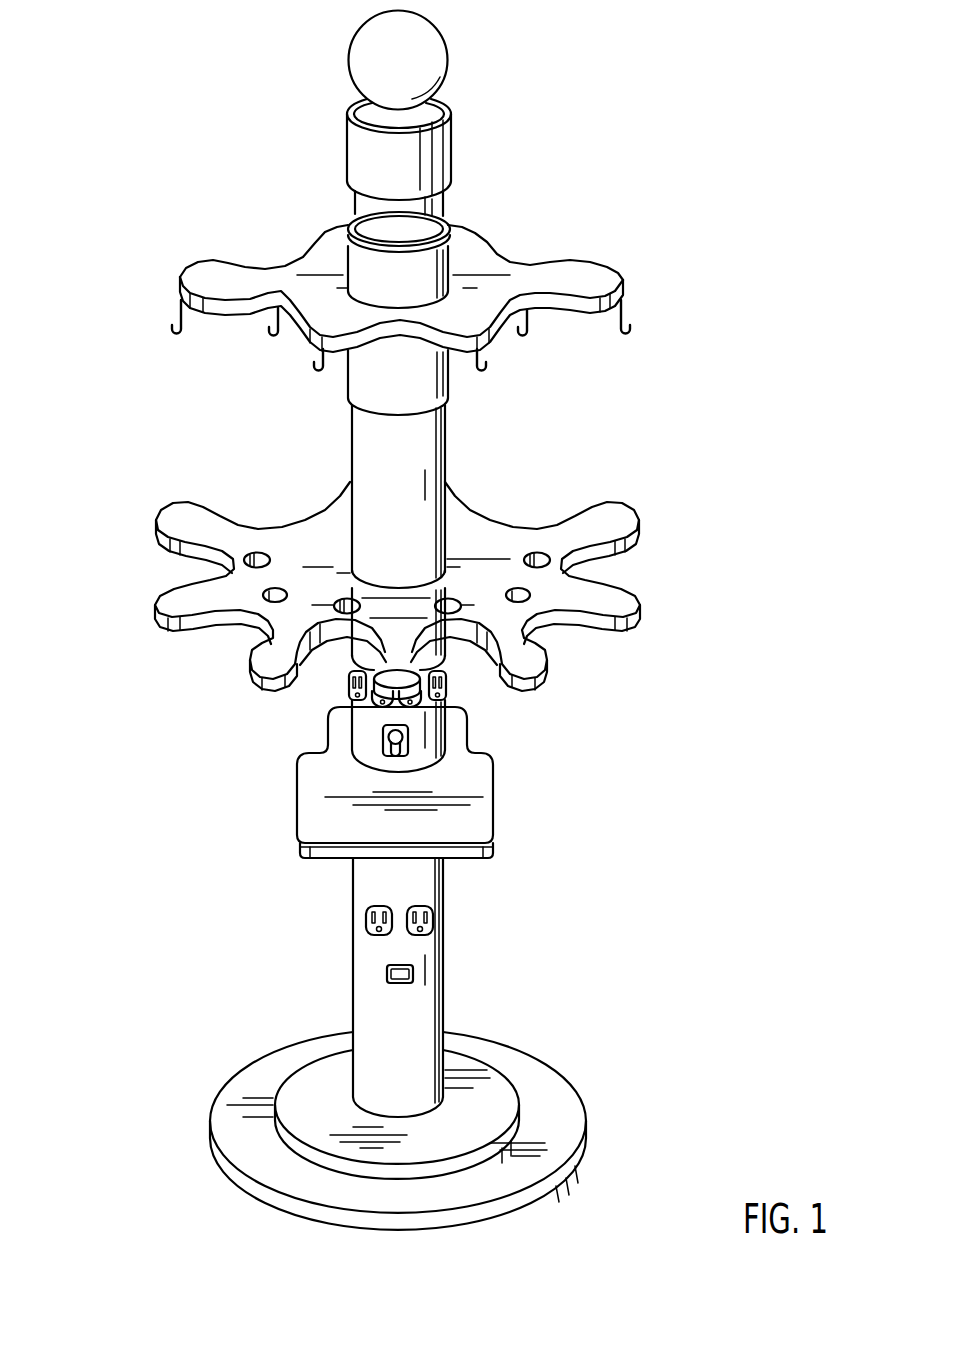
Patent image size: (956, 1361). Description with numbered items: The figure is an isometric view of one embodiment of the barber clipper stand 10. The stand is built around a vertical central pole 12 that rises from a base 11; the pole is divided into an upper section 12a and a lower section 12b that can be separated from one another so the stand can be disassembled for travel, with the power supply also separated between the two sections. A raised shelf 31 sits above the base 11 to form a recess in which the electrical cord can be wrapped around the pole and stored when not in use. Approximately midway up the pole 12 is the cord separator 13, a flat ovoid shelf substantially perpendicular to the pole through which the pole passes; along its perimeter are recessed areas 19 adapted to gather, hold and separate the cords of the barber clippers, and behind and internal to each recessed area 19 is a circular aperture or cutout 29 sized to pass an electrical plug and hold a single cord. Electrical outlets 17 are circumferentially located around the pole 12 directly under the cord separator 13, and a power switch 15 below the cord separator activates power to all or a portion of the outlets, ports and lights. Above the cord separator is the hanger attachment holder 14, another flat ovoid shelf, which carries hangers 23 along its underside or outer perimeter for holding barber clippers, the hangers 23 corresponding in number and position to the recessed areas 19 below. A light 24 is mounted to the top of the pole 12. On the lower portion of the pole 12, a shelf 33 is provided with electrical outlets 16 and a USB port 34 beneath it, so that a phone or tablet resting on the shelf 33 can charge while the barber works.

The barber clipper stand 10 is at (129, 121).
The base 11 is at (587, 1140).
The central pole 12 is at (445, 985).
The upper section of pole 12a is at (407, 450).
The lower section of pole 12b is at (413, 1005).
The cord separator 13 is at (628, 512).
The hanger attachment holder 14 is at (483, 266).
The electrical switch 15 is at (410, 732).
The electrical outlet 16 is at (430, 925).
The electrical outlet 17 is at (348, 690).
The recessed area 19 is at (140, 556).
The hanger 23 is at (272, 333).
The light 24 is at (427, 52).
The aperture or cutout 29 is at (257, 553).
The raised shelf 31 is at (497, 1097).
The shelf 33 is at (330, 813).
The USB port 34 is at (385, 978).